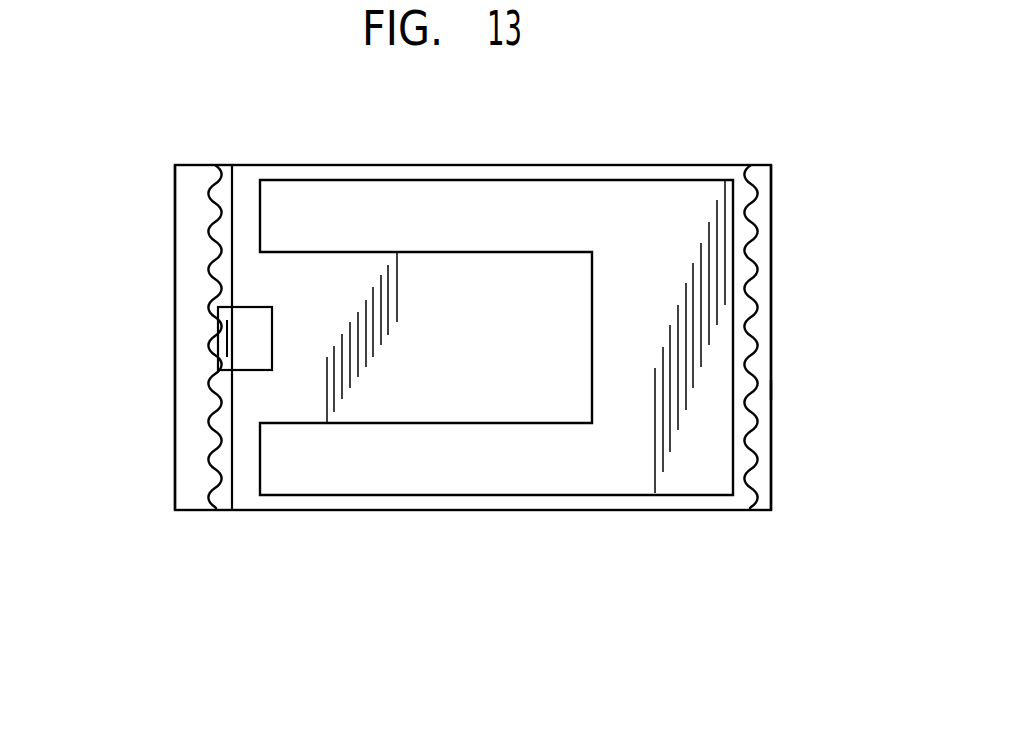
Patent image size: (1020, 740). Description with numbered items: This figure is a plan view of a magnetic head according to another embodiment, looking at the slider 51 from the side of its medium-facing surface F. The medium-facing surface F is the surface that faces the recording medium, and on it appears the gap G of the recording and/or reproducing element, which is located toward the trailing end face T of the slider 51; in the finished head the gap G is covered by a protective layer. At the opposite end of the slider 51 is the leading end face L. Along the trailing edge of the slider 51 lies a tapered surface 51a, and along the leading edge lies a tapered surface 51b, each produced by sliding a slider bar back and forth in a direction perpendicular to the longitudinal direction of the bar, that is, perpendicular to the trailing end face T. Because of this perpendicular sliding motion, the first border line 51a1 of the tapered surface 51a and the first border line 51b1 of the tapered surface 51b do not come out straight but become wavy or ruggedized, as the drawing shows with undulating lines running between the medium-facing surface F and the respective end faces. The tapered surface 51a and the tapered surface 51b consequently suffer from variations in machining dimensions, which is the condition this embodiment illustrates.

The slider 51 is at (458, 510).
The tapered surface 51a is at (195, 327).
The first border line 51a1 is at (217, 316).
The tapered surface 51b is at (772, 300).
The first border line 51b1 is at (754, 200).
The medium-facing surface F is at (445, 300).
The gap G is at (218, 343).
The trailing end face T is at (173, 397).
The leading end face L is at (784, 390).